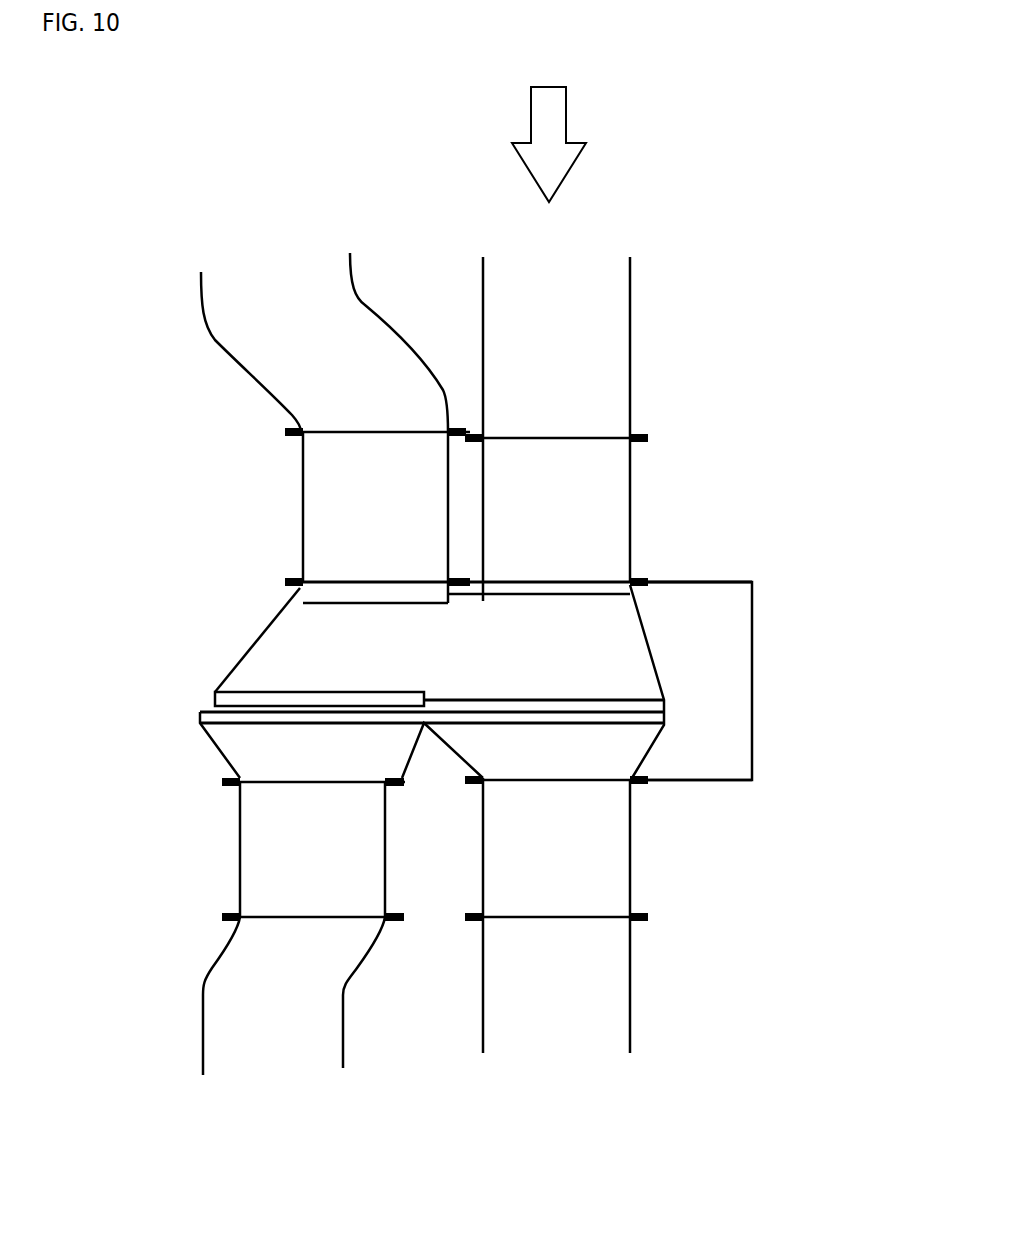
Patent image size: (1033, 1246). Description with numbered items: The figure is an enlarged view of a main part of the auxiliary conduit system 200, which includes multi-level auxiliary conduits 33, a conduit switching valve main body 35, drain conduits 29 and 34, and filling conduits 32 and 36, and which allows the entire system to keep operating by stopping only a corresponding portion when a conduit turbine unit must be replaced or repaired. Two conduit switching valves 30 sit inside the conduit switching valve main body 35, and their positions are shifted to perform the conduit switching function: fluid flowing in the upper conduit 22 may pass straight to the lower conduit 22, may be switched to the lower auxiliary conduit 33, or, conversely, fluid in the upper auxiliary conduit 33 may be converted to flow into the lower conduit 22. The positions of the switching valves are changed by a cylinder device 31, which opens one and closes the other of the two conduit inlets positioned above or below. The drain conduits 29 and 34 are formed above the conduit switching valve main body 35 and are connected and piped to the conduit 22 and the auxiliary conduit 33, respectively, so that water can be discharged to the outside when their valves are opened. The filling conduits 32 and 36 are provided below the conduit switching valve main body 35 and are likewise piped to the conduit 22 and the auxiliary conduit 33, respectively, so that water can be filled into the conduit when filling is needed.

The auxiliary conduit system 200 is at (208, 251).
The conduit 22 is at (585, 338).
The drain conduit 29 is at (610, 505).
The conduit switching valve 30 is at (330, 592).
The cylinder device 31 is at (730, 638).
The filling conduit 32 is at (590, 873).
The auxiliary conduit 33 is at (265, 337).
The drain conduit 34 is at (347, 507).
The conduit switching valve main body 35 is at (595, 676).
The filling conduit 36 is at (268, 848).